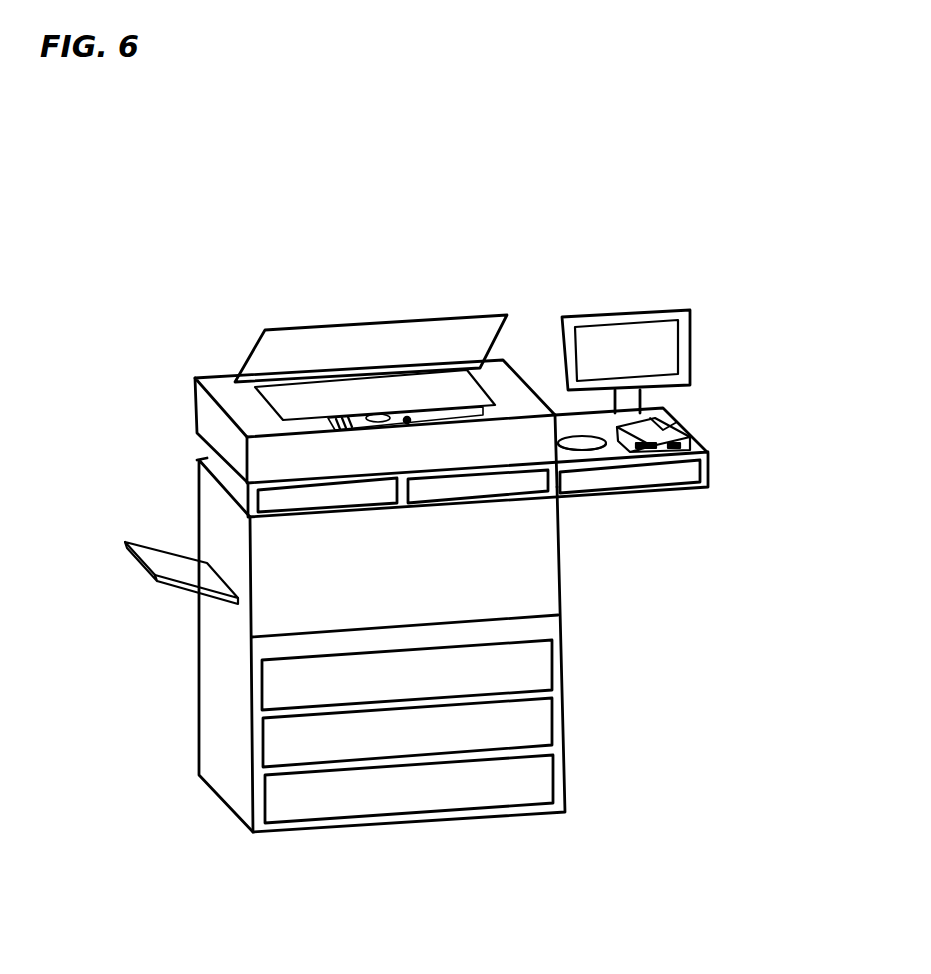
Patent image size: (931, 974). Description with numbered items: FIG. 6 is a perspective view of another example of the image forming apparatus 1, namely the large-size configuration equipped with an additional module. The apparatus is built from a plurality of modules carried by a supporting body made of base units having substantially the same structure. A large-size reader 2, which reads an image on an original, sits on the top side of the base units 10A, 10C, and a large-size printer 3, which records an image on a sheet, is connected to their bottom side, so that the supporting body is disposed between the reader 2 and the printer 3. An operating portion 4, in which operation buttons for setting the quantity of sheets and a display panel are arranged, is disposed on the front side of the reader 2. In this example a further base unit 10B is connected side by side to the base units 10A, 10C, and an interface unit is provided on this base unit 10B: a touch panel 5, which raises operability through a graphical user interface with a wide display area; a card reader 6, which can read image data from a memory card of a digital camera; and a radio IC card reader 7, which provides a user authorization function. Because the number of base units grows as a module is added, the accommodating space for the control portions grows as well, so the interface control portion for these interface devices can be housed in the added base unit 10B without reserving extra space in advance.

The image forming apparatus 1 is at (483, 300).
The reader 2 is at (207, 425).
The printer 3 is at (530, 568).
The operating portion 4 is at (337, 422).
The touch panel 5 is at (658, 345).
The card reader 6 is at (680, 445).
The radio IC card reader 7 is at (583, 449).
The base unit 10A is at (212, 480).
The base unit 10B is at (675, 473).
The base unit 10C is at (498, 483).